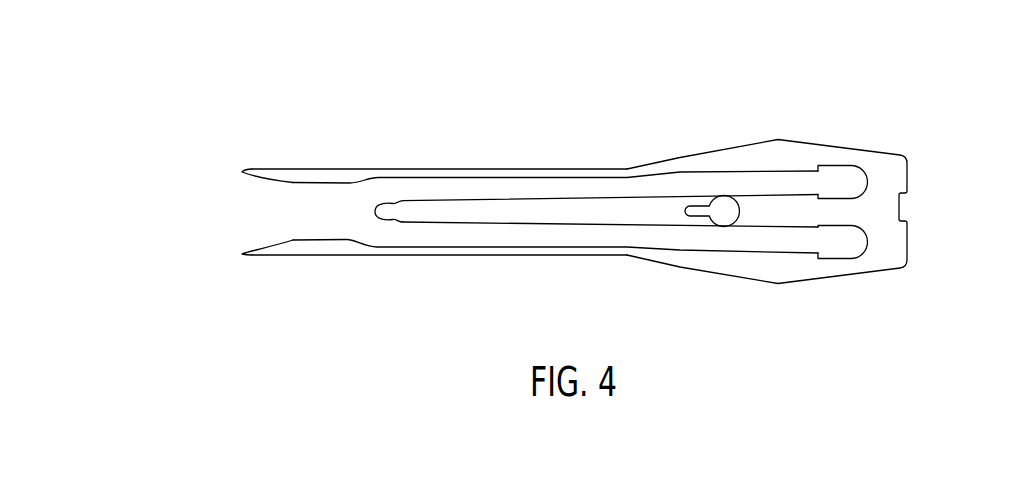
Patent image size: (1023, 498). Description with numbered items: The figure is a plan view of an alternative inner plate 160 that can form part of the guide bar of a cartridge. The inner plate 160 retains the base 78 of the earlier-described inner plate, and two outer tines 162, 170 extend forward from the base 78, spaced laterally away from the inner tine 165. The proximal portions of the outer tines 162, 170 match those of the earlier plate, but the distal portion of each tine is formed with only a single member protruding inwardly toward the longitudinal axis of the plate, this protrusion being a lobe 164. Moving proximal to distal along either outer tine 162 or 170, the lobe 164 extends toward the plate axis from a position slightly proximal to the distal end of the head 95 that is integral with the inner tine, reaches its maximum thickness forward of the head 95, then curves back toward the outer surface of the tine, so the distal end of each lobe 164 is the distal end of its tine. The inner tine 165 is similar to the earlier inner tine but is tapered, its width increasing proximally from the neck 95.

The inner plate 160 is at (552, 158).
The base 78 is at (888, 177).
The outer tine 170 is at (413, 171).
The outer tine 162 is at (563, 248).
The lobe 164 is at (292, 182).
The inner tine 165 is at (450, 213).
The head 95 is at (376, 212).